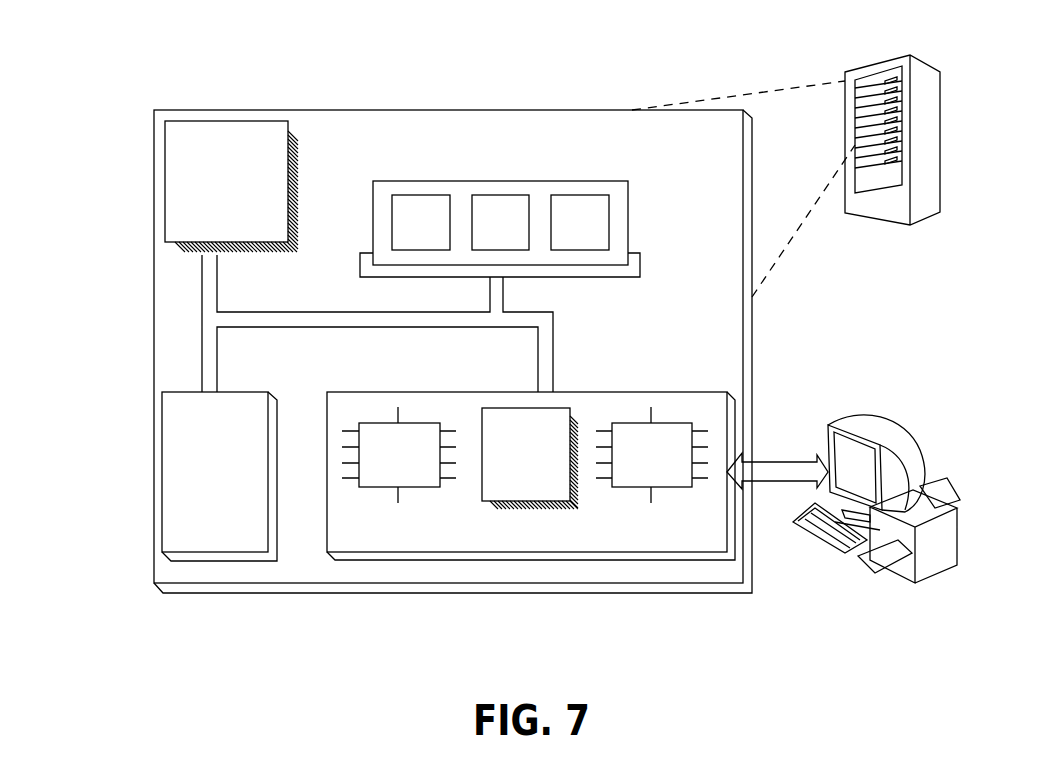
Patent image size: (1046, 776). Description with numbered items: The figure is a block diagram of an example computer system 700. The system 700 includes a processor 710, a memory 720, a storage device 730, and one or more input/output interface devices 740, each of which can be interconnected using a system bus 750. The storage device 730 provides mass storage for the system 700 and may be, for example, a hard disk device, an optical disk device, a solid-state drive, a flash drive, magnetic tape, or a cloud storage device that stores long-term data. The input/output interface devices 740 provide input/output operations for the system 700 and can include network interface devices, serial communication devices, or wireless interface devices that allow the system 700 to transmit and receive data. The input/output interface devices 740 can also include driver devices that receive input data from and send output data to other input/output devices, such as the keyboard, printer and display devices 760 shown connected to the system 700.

The computer system 700 is at (106, 68).
The processor 710 is at (281, 236).
The memory 720 is at (628, 222).
The storage device 730 is at (251, 543).
The input/output interface devices 740 is at (690, 392).
The system bus 750 is at (375, 327).
The keyboard, printer and display devices 760 is at (823, 424).